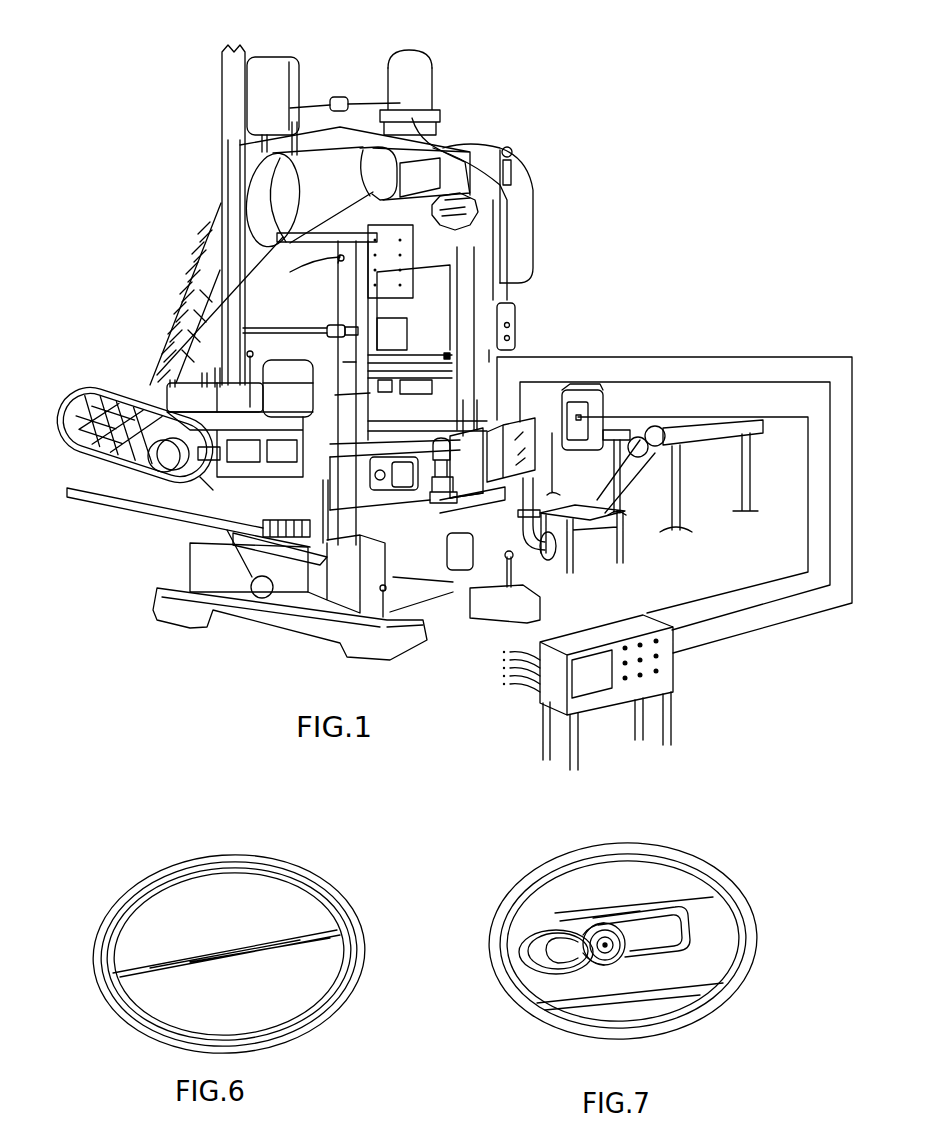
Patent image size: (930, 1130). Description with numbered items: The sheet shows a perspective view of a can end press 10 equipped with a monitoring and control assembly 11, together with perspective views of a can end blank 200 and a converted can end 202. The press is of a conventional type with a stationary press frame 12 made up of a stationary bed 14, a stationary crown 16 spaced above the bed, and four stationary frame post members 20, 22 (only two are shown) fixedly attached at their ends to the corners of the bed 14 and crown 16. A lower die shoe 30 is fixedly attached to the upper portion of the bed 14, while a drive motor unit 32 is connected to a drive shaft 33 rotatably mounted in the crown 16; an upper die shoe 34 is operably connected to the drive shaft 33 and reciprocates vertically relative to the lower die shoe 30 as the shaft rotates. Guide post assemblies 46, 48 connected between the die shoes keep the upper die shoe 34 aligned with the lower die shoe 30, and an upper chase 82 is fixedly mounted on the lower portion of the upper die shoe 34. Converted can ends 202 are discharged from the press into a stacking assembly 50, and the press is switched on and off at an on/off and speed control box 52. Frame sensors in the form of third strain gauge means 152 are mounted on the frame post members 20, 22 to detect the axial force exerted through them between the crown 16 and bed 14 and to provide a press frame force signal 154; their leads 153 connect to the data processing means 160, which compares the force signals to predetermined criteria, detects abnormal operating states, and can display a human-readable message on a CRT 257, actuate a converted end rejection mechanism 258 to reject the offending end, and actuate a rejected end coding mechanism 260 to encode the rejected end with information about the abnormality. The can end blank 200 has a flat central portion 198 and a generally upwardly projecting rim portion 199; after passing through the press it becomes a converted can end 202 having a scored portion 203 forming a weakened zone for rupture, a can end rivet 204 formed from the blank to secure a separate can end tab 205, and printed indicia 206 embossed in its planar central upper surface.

In FIG. 1, the can end press 10 is at (618, 110).
In FIG. 1, the control assembly 11 is at (692, 703).
In FIG. 1, the press frame 12 is at (300, 321).
In FIG. 1, the bed 14 is at (470, 477).
In FIG. 1, the crown 16 is at (460, 203).
In FIG. 1, the frame post member 20 is at (476, 297).
In FIG. 1, the frame post member 22 is at (343, 362).
In FIG. 1, the lower die shoe 30 is at (452, 428).
In FIG. 1, the drive motor unit 32 is at (527, 218).
In FIG. 1, the drive shaft 33 is at (480, 203).
In FIG. 1, the upper die shoe 34 is at (447, 357).
In FIG. 1, the guide post assembly 46 is at (370, 393).
In FIG. 1, the guide post assembly 48 is at (430, 385).
In FIG. 1, the stacking assembly 50 is at (712, 432).
In FIG. 1, the on/off and speed control box 52 is at (515, 313).
In FIG. 1, the upper chase 82 is at (443, 372).
In FIG. 1, the third strain gauge means 152 is at (338, 253).
In FIG. 1, the leads 153 is at (313, 270).
In FIG. 1, the press frame force signal 154 is at (280, 272).
In FIG. 1, the data processing means 160 is at (668, 673).
In FIG. 1, the CRT 257 is at (580, 677).
In FIG. 1, the converted end rejection mechanism 258 is at (522, 460).
In FIG. 1, the rejected end coding mechanism 260 is at (604, 398).
In FIG. 6, the flat central portion 198 is at (225, 903).
In FIG. 6, the rim portion 199 is at (333, 900).
In FIG. 6, the can end blank 200 is at (145, 845).
In FIG. 7, the converted can end 202 is at (757, 865).
In FIG. 7, the scored portion 203 is at (563, 973).
In FIG. 7, the can end rivet 204 is at (620, 953).
In FIG. 7, the can end tab 205 is at (672, 943).
In FIG. 7, the printed indicia 206 is at (555, 883).